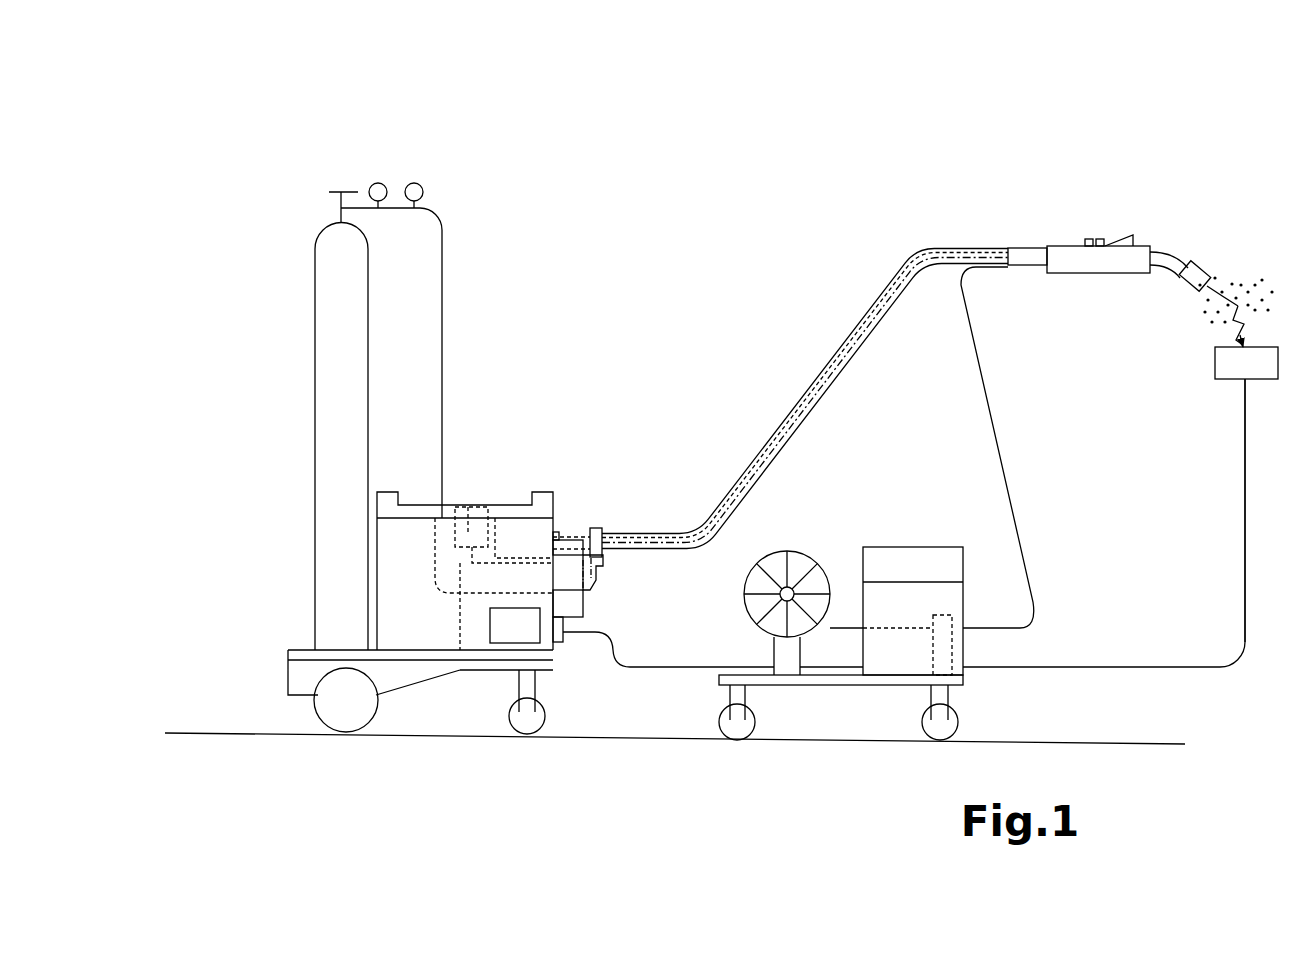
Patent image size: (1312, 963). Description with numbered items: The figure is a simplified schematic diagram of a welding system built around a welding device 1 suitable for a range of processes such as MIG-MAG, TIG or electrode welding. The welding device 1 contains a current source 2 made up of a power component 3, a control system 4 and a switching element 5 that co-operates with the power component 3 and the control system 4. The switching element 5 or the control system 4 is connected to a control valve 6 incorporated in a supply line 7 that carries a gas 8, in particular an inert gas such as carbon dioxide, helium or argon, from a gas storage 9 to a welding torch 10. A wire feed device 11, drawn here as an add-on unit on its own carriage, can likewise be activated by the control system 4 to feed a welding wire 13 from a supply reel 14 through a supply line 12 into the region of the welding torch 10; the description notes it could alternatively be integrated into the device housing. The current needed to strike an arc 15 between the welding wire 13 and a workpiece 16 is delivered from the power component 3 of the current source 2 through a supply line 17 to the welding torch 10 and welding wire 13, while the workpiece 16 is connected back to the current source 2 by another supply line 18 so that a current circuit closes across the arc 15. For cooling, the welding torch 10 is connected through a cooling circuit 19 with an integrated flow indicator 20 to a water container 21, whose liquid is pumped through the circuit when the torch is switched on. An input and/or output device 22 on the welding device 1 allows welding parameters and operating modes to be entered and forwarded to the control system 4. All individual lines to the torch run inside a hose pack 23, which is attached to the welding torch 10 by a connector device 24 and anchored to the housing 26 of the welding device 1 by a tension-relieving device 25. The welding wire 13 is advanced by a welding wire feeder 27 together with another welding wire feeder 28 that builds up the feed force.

The welding device 1 is at (253, 175).
The current source 2 is at (513, 385).
The power component 3 is at (507, 632).
The control system 4 is at (455, 620).
The switching element 5 is at (563, 657).
The control valve 6 is at (573, 625).
The supply line 7 is at (944, 262).
The gas 8 is at (1222, 258).
The gas storage 9 is at (340, 298).
The welding torch 10 is at (1145, 218).
The wire feed device 11 is at (1003, 710).
The supply line 12 is at (1003, 470).
The welding wire 13 is at (885, 630).
The supply reel 14 is at (797, 565).
The arc 15 is at (1205, 338).
The workpiece 16 is at (1257, 365).
The supply line 17 is at (873, 302).
The supply line 18 is at (1246, 548).
The cooling circuit 19 is at (748, 472).
The flow indicator 20 is at (560, 533).
The water container 21 is at (518, 530).
The input and/or output device 22 is at (548, 518).
The hose pack 23 is at (653, 535).
The connector device 24 is at (1028, 258).
The tension-relieving device 25 is at (598, 530).
The housing 26 is at (598, 563).
The welding wire feeder 27 is at (465, 508).
The welding wire feeder 28 is at (495, 525).